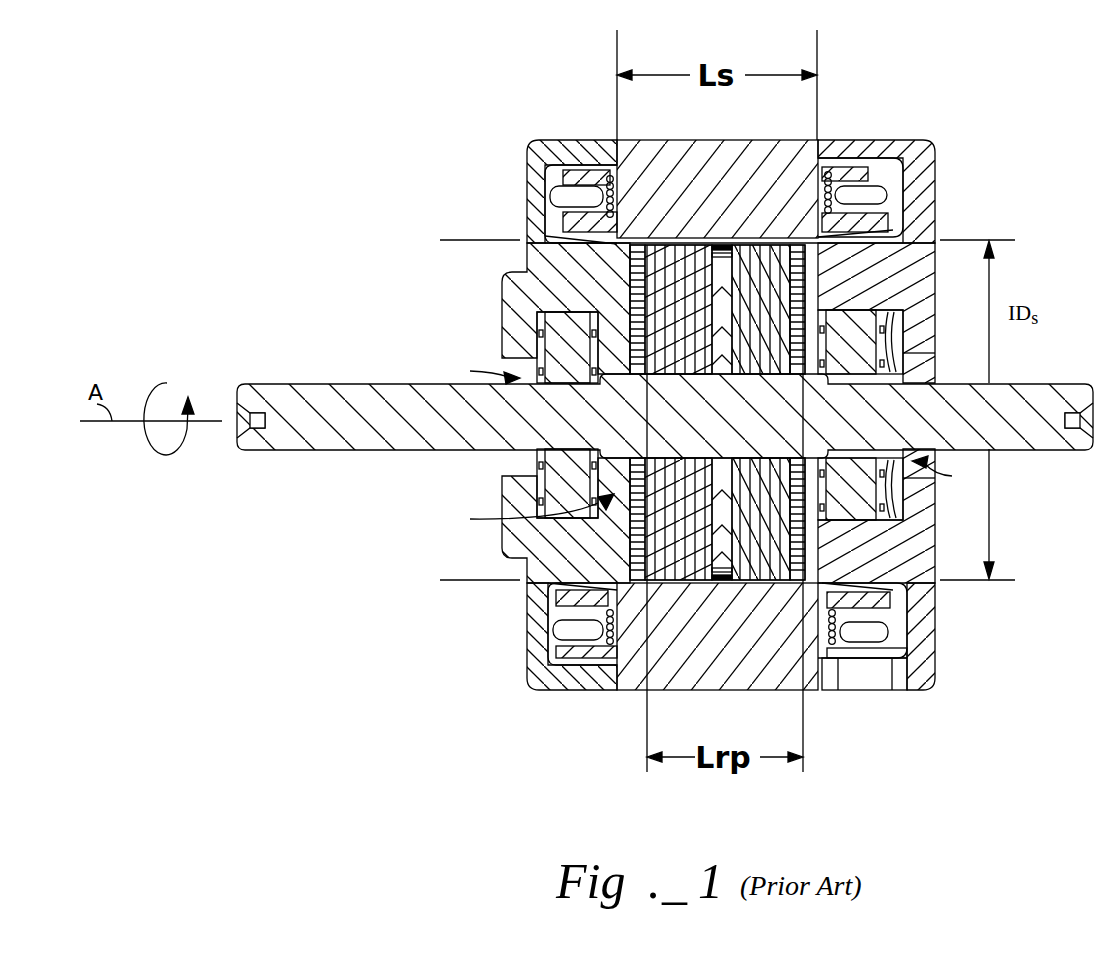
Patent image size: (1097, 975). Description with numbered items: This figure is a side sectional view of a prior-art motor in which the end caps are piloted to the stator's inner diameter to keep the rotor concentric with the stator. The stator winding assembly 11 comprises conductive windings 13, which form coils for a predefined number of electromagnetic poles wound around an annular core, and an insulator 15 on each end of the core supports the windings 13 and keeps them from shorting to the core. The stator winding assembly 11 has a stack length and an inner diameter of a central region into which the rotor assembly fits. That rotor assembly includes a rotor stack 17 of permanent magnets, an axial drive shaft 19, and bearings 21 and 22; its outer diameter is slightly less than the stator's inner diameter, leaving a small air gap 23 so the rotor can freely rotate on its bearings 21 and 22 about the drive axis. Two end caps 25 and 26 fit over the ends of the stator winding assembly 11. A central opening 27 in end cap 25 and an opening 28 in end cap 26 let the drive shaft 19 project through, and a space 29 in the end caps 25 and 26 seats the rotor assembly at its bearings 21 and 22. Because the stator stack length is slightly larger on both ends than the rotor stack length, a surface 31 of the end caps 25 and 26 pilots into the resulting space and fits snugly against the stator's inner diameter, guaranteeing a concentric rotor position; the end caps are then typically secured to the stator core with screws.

The stator winding assembly 11 is at (736, 140).
The conductive windings 13 is at (618, 162).
The insulator 15 is at (547, 172).
The rotor stack 17 is at (647, 292).
The axial drive shaft 19 is at (350, 390).
The bearing 21 is at (560, 323).
The bearing 22 is at (900, 318).
The air gap 23 is at (704, 592).
The end cap 25 is at (520, 532).
The end cap 26 is at (930, 645).
The central opening 27 is at (481, 370).
The opening 28 is at (946, 473).
The space 29 is at (528, 513).
The surface 31 is at (612, 590).